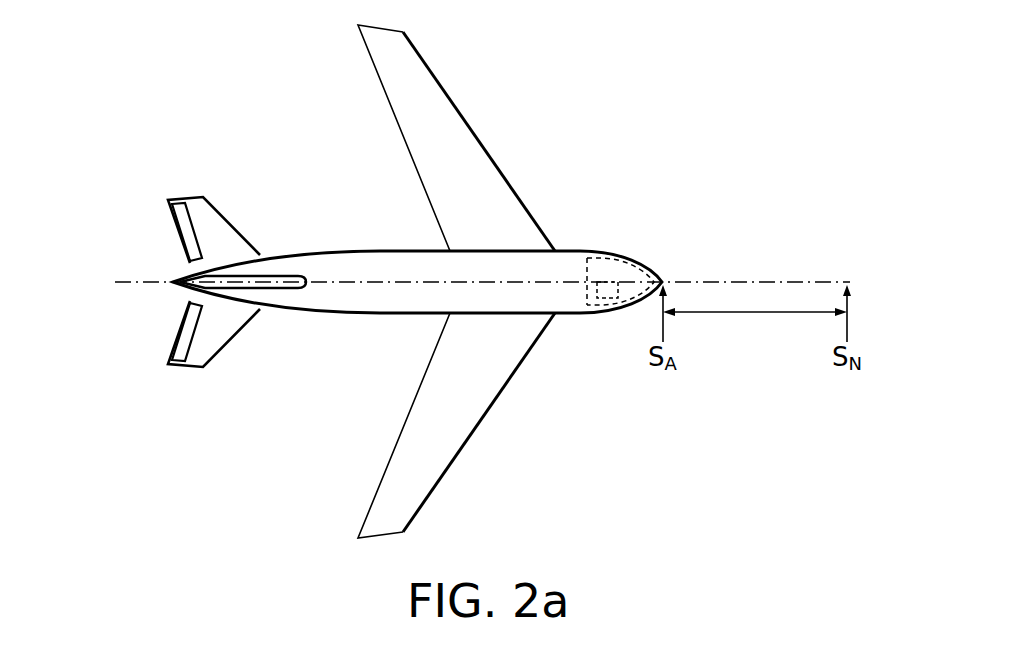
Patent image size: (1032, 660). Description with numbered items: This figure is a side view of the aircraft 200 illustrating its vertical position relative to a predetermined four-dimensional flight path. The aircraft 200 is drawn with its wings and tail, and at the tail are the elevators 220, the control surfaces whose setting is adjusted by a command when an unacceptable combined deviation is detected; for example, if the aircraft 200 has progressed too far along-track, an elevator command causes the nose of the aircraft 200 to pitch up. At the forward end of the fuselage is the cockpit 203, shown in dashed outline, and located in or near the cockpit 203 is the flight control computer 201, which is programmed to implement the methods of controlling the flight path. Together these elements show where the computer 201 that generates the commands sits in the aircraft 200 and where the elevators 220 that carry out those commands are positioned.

The aircraft 200 is at (503, 138).
The flight control computer 201 is at (603, 308).
The cockpit 203 is at (610, 252).
The elevator 220 is at (183, 232).